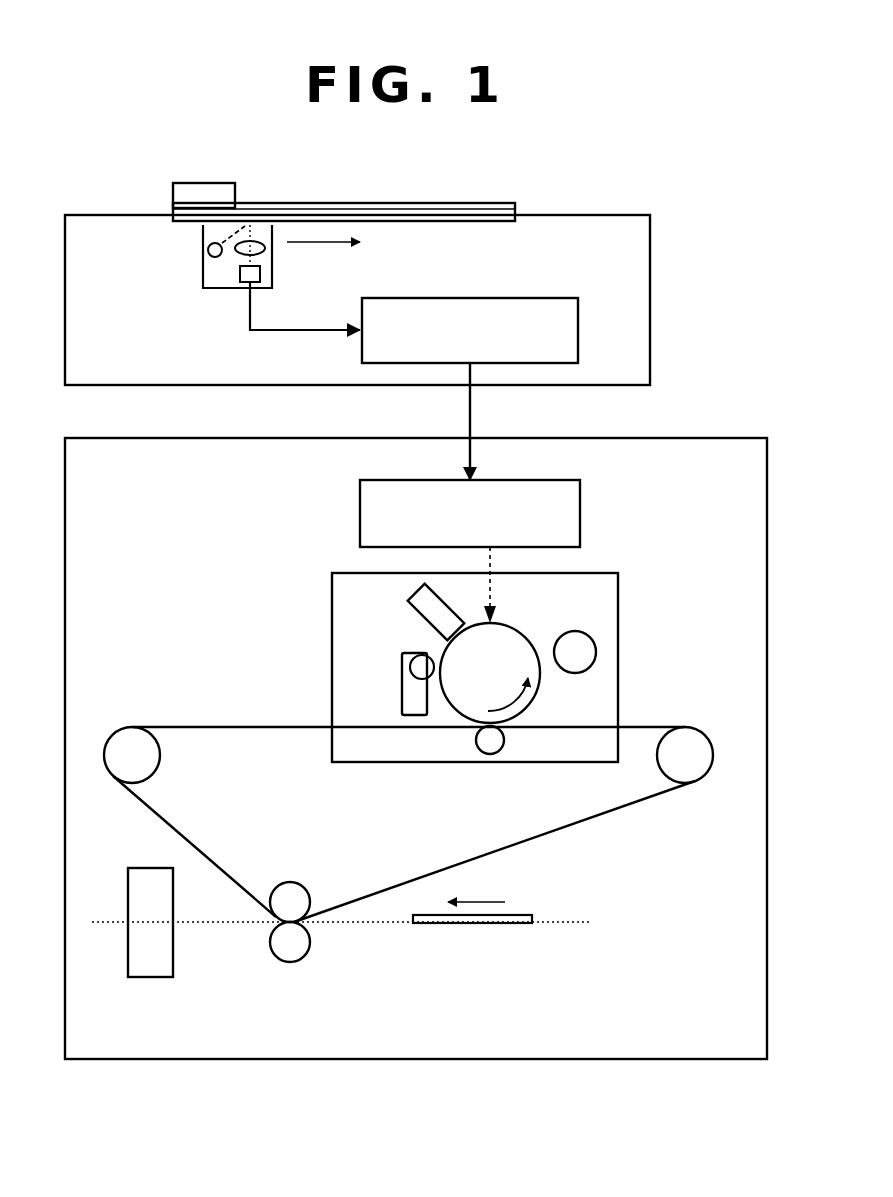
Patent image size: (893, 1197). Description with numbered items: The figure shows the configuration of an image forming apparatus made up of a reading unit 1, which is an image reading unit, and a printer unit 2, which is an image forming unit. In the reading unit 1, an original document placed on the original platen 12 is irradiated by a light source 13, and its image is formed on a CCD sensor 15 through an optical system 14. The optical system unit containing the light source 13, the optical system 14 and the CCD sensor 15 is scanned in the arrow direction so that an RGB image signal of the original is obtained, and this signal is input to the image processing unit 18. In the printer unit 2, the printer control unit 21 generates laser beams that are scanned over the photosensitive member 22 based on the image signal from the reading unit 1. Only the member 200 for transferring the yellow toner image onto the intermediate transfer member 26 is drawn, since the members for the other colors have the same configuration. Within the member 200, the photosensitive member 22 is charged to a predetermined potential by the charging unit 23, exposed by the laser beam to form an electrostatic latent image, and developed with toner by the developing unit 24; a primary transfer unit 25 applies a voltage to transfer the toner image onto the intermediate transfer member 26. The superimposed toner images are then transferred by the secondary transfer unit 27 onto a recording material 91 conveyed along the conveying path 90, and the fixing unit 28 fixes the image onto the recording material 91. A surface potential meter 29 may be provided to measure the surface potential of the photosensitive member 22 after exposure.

The reading unit 1 is at (650, 215).
The printer unit 2 is at (693, 438).
The original platen 12 is at (515, 213).
The light source 13 is at (203, 265).
The optical system 14 is at (272, 258).
The CCD sensor 15 is at (240, 278).
The image processing unit 18 is at (518, 298).
The printer control unit 21 is at (582, 527).
The photosensitive member 22 is at (534, 712).
The charging unit 23 is at (575, 631).
The developing unit 24 is at (402, 695).
The primary transfer unit 25 is at (478, 734).
The intermediate transfer member 26 is at (200, 727).
The secondary transfer unit 27 is at (302, 958).
The fixing unit 28 is at (173, 977).
The surface potential meter 29 is at (424, 604).
The conveying path 90 is at (582, 922).
The recording material 91 is at (532, 915).
The member for transferring the yellow toner image 200 is at (618, 655).